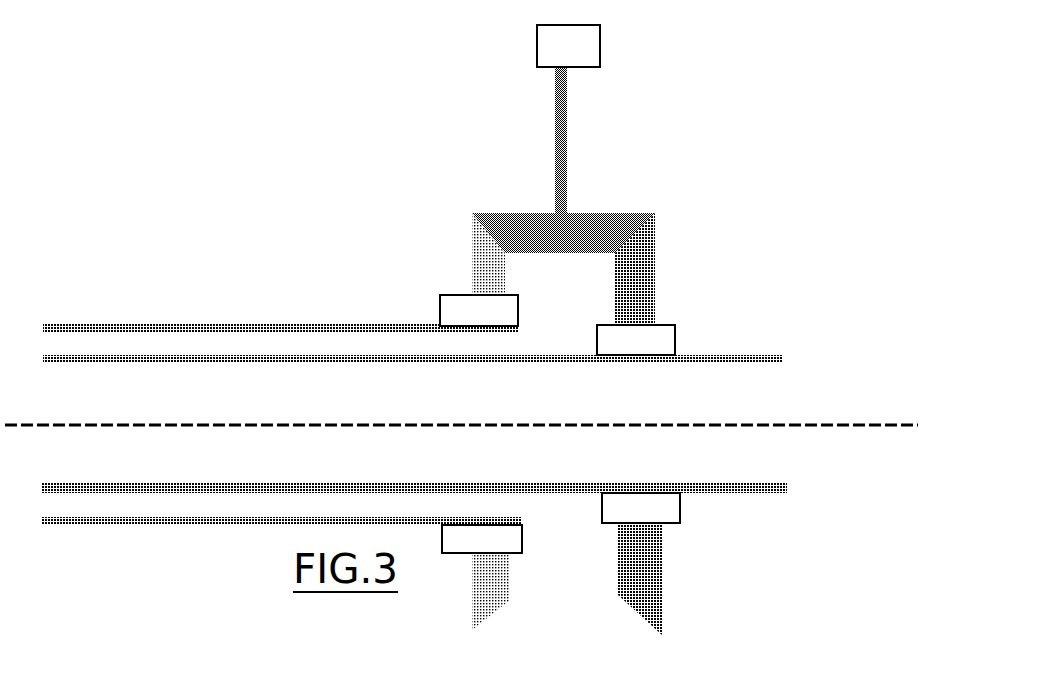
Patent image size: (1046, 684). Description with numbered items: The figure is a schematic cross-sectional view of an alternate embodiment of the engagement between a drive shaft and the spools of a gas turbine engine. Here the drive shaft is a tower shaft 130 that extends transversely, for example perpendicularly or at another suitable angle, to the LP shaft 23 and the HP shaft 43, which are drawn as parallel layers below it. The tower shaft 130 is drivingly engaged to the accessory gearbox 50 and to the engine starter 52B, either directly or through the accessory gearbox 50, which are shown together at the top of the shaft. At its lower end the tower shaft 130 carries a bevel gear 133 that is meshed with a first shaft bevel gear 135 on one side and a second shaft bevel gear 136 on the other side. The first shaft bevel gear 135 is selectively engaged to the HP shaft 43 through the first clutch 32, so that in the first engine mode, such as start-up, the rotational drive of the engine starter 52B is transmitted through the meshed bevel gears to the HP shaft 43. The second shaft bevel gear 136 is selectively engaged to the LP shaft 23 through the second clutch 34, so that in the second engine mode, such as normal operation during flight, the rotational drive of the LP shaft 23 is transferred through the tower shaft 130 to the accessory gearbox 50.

The LP shaft 23 is at (757, 357).
The HP shaft 43 is at (207, 322).
The first clutch 32 is at (440, 308).
The second clutch 34 is at (675, 343).
The first shaft bevel gear 135 is at (470, 266).
The second shaft bevel gear 136 is at (650, 277).
The bevel gear 133 is at (510, 213).
The tower shaft 130 is at (567, 131).
The engine starter 52B is at (600, 49).
The accessory gearbox 50 is at (568, 46).